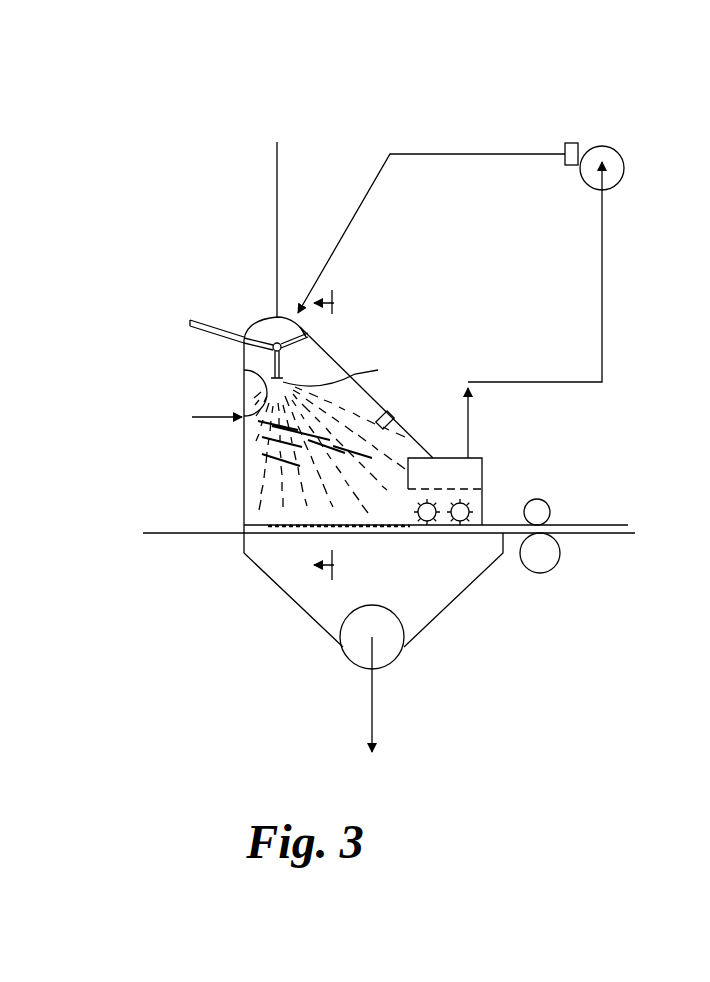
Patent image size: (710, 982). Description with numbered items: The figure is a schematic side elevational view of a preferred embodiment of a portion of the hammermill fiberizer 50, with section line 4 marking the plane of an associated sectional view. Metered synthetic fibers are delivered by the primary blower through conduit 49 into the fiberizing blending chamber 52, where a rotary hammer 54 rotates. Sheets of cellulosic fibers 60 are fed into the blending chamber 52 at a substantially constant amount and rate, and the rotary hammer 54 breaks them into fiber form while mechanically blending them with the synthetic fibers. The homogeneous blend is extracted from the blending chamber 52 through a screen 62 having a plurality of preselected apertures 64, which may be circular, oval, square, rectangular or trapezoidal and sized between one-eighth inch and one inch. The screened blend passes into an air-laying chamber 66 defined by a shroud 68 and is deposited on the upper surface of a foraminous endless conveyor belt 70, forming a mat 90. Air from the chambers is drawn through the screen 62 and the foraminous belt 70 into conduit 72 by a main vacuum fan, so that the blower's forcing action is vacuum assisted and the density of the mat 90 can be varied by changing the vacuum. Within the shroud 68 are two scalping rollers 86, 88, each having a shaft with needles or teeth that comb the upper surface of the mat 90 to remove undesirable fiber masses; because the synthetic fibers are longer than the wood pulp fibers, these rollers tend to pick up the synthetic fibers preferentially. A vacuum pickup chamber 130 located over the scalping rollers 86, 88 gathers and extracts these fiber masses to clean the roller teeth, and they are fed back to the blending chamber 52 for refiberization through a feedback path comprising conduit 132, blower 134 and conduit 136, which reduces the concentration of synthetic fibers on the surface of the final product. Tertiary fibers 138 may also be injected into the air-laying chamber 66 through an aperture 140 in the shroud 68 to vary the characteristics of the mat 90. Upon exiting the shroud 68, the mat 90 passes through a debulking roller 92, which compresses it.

The section line 4- 4 is at (332, 437).
The conduit 49 is at (275, 170).
The fiberizer 50 is at (242, 348).
The fiberizing blending chamber 52 is at (292, 312).
The rotary hammer 54 is at (263, 314).
The cellulosic fibers 60 is at (213, 318).
The screen 62 is at (329, 431).
The apertures 64 is at (320, 348).
The air-laying chamber 66 is at (390, 412).
The shroud 68 is at (422, 452).
The foraminous endless conveyor belt 70 is at (197, 538).
The conduit 72 is at (375, 690).
The scalping roller 86 is at (424, 520).
The scalping roller 88 is at (460, 520).
The mat 90 is at (295, 514).
The debulking roller 92 is at (540, 514).
The vacuum pickup chamber 130 is at (476, 476).
The conduit 132 is at (535, 382).
The blower 134 is at (614, 160).
The conduit 136 is at (462, 152).
The tertiary fibers 138 is at (207, 418).
The aperture 140 is at (245, 371).